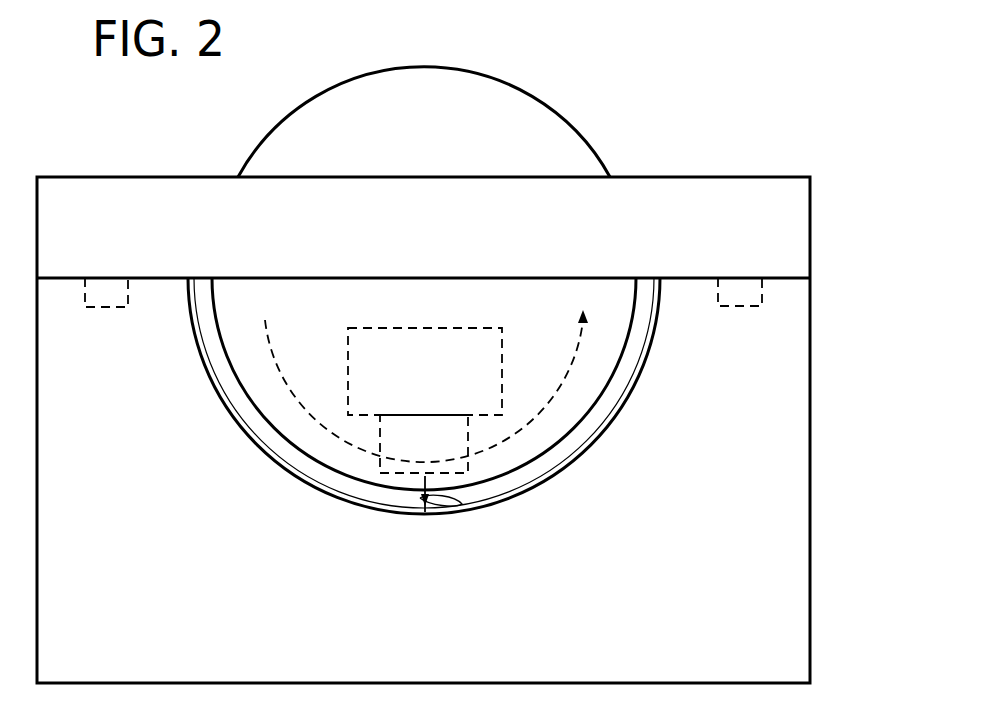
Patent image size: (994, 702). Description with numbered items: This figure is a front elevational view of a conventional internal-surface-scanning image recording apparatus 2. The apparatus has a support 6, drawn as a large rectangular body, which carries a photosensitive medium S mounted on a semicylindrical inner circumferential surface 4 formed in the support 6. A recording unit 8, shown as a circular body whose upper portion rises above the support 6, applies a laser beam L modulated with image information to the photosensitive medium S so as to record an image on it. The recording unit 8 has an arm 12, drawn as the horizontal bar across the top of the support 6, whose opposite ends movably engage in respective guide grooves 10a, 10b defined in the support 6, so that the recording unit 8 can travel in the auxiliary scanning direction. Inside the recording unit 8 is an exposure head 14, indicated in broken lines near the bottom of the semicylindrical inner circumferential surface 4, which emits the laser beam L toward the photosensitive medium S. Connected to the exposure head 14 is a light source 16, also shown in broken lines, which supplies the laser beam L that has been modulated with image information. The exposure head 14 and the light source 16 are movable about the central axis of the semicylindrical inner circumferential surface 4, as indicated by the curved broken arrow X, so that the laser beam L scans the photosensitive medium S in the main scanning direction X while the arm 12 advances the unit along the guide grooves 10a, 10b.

The internal-surface-scanning image recording apparatus 2 is at (664, 112).
The semicylindrical inner circumferential surface 4 is at (296, 470).
The support 6 is at (777, 515).
The recording unit 8 is at (419, 104).
The guide groove 10a is at (108, 308).
The guide groove 10b is at (740, 307).
The arm 12 is at (737, 212).
The exposure head 14 is at (398, 480).
The light source 16 is at (415, 375).
The laser beam L is at (460, 505).
The photosensitive medium S is at (628, 405).
The main scanning direction X is at (430, 371).